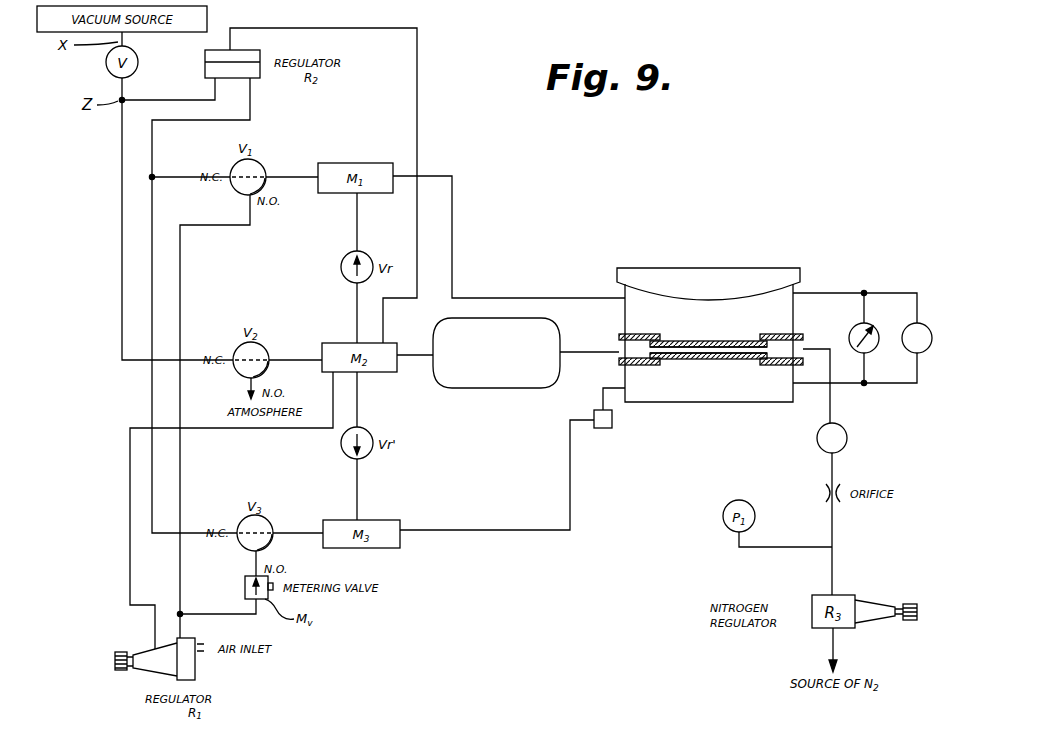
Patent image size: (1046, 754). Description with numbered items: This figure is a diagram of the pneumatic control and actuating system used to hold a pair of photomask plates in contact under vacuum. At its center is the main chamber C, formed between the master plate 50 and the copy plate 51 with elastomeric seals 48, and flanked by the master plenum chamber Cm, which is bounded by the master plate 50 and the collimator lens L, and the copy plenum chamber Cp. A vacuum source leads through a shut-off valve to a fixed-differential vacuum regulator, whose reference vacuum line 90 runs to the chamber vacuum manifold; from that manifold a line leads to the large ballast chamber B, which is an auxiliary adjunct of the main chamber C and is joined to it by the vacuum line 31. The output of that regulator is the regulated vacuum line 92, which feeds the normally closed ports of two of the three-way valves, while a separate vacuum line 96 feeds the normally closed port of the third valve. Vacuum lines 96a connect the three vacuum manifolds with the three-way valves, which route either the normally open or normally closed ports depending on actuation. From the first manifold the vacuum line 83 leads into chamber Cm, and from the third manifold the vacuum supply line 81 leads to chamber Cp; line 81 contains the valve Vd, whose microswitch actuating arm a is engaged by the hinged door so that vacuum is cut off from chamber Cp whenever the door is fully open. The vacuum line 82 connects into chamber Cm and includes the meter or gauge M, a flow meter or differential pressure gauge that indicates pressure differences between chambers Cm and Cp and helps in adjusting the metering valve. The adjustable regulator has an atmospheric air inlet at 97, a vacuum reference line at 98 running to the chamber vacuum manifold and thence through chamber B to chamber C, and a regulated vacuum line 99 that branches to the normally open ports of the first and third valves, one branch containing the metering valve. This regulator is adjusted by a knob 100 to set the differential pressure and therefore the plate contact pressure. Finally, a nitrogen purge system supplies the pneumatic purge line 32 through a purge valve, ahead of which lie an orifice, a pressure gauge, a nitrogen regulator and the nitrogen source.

The vacuum line 31 is at (574, 350).
The pneumatic purge line 32 is at (836, 409).
The elastomeric seals 48 is at (633, 334).
The master plate 50 is at (728, 341).
The copy plate 51 is at (718, 360).
The vacuum supply line 81 is at (571, 487).
The vacuum line 82 is at (880, 291).
The vacuum line 83 is at (512, 297).
The reference vacuum line 90 is at (418, 105).
The regulated vacuum line 92 is at (153, 149).
The vacuum line 96 is at (122, 258).
The vacuum lines 96a is at (290, 172).
The atmospheric air inlet 97 is at (205, 641).
The vacuum reference line 98 is at (130, 550).
The regulated vacuum line 99 is at (183, 627).
The knob 100 is at (118, 652).
The ballast chamber B is at (490, 388).
The main chamber C is at (690, 346).
The collimator lens L is at (708, 284).
The master plenum chamber Cm is at (790, 292).
The copy plenum chamber Cp is at (752, 402).
The meter or gauge M is at (851, 330).
The valve Vd is at (600, 409).
The actuating arm a is at (612, 426).